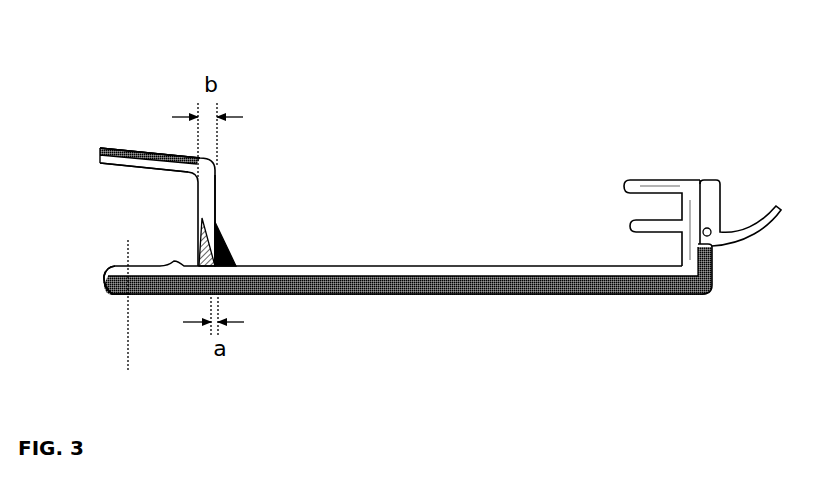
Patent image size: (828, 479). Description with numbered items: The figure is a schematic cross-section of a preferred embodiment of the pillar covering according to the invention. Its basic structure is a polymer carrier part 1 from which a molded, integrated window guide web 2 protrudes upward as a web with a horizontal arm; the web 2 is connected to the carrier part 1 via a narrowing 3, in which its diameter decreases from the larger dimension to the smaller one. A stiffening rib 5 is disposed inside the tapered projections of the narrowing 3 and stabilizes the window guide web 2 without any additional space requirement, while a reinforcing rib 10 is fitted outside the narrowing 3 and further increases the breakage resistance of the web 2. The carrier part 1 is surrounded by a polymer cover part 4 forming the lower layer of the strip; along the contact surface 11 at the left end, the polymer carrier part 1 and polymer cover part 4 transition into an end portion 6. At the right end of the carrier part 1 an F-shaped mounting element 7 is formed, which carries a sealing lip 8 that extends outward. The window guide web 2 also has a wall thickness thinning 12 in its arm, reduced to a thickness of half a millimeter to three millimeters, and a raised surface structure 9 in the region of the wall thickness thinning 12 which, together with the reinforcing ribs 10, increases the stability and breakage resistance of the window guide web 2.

The polymer carrier part 1 is at (392, 254).
The window guide web 2 is at (222, 131).
The narrowing 3 is at (215, 230).
The polymer cover part 4 is at (390, 300).
The stiffening rib 5 is at (200, 257).
The end portion 6 is at (114, 302).
The F-shaped mounting element 7 is at (653, 158).
The sealing lip 8 is at (760, 213).
The raised surface structure 9 is at (148, 142).
The reinforcing rib 10 is at (233, 228).
The contact surface 11 is at (118, 268).
The wall thickness thinning 12 is at (113, 155).